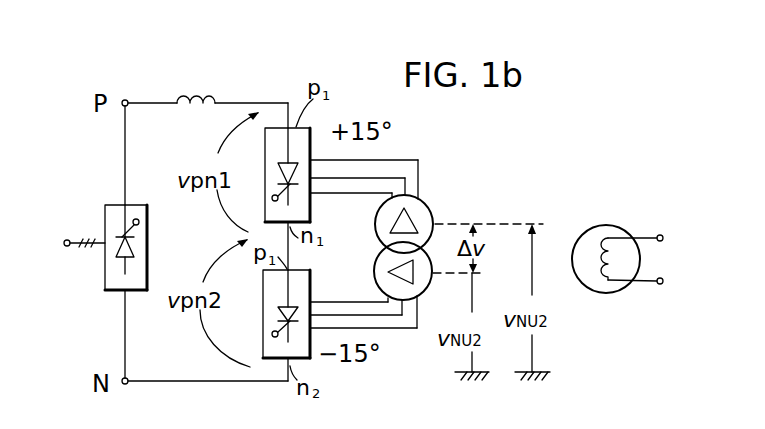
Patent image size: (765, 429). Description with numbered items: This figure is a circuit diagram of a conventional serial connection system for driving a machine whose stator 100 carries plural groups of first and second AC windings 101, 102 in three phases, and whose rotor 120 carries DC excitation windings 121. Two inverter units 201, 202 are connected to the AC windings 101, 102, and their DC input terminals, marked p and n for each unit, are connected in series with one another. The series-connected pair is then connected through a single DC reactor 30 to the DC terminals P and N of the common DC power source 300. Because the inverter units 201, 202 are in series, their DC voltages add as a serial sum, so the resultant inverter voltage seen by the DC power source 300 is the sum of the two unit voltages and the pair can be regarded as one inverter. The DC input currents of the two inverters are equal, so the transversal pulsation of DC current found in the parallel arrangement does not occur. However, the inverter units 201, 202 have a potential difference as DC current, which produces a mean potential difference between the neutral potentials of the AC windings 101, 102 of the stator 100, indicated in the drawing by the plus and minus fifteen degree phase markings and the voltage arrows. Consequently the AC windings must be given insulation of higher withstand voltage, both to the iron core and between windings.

The DC reactor 30 is at (200, 97).
The common DC power source 300 is at (106, 218).
The inverter unit 201 is at (310, 197).
The inverter unit 202 is at (263, 308).
The stator 100 is at (423, 222).
The first AC winding 101 is at (418, 208).
The second AC winding 102 is at (377, 276).
The rotor 120 is at (620, 243).
The DC excitation winding 121 is at (600, 273).